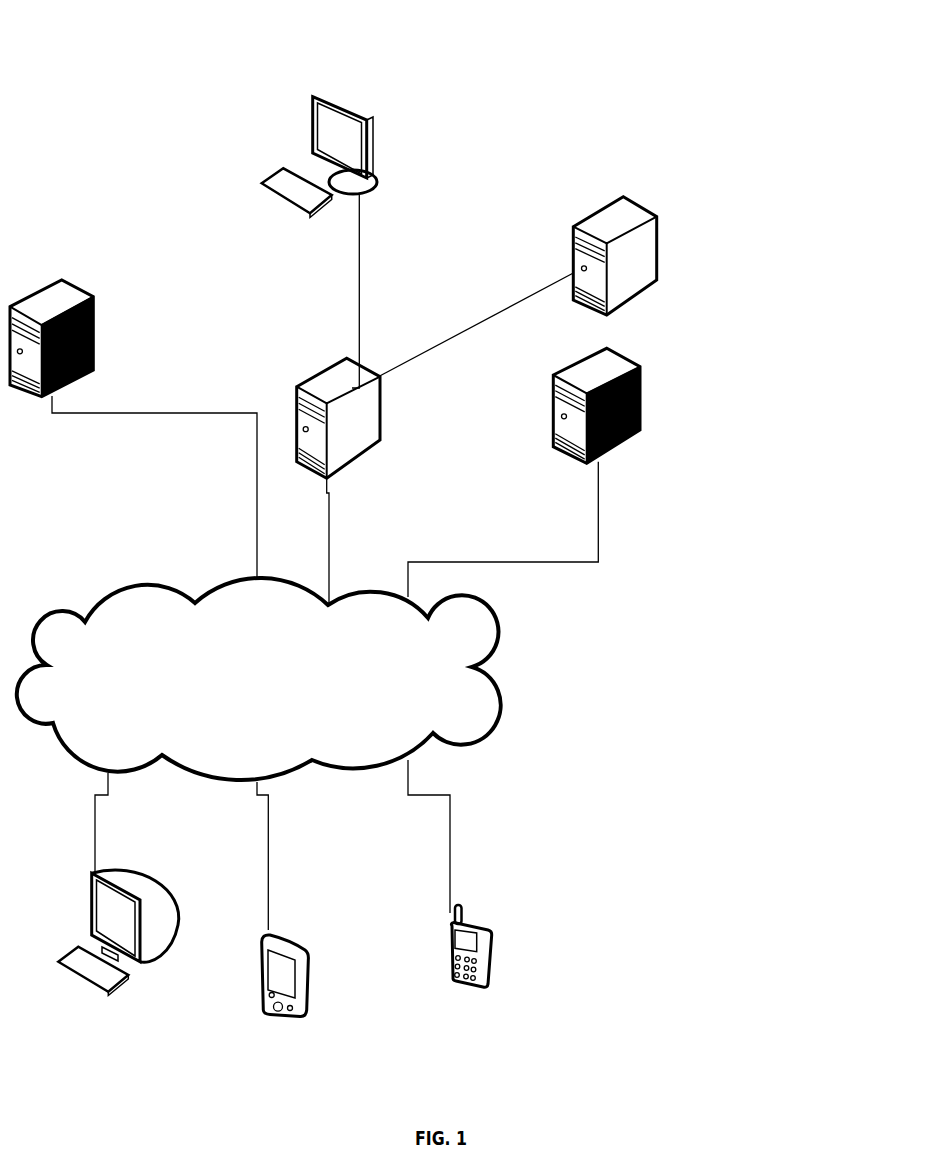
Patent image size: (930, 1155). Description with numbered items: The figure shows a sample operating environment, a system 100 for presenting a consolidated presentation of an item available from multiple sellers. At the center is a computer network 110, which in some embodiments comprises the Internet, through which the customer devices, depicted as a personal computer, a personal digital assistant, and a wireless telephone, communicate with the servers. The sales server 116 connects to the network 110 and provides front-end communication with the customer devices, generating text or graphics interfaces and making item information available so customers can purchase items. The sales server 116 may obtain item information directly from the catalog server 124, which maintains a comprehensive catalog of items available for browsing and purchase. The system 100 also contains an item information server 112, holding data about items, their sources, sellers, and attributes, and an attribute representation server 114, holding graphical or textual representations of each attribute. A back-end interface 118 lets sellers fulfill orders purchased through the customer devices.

The system 100 is at (186, 108).
The computer network 110 is at (259, 679).
The item information server 112 is at (640, 392).
The attribute representation server 114 is at (97, 320).
The sales server 116 is at (380, 420).
The back-end interface 118 is at (370, 120).
The catalog server 124 is at (657, 217).